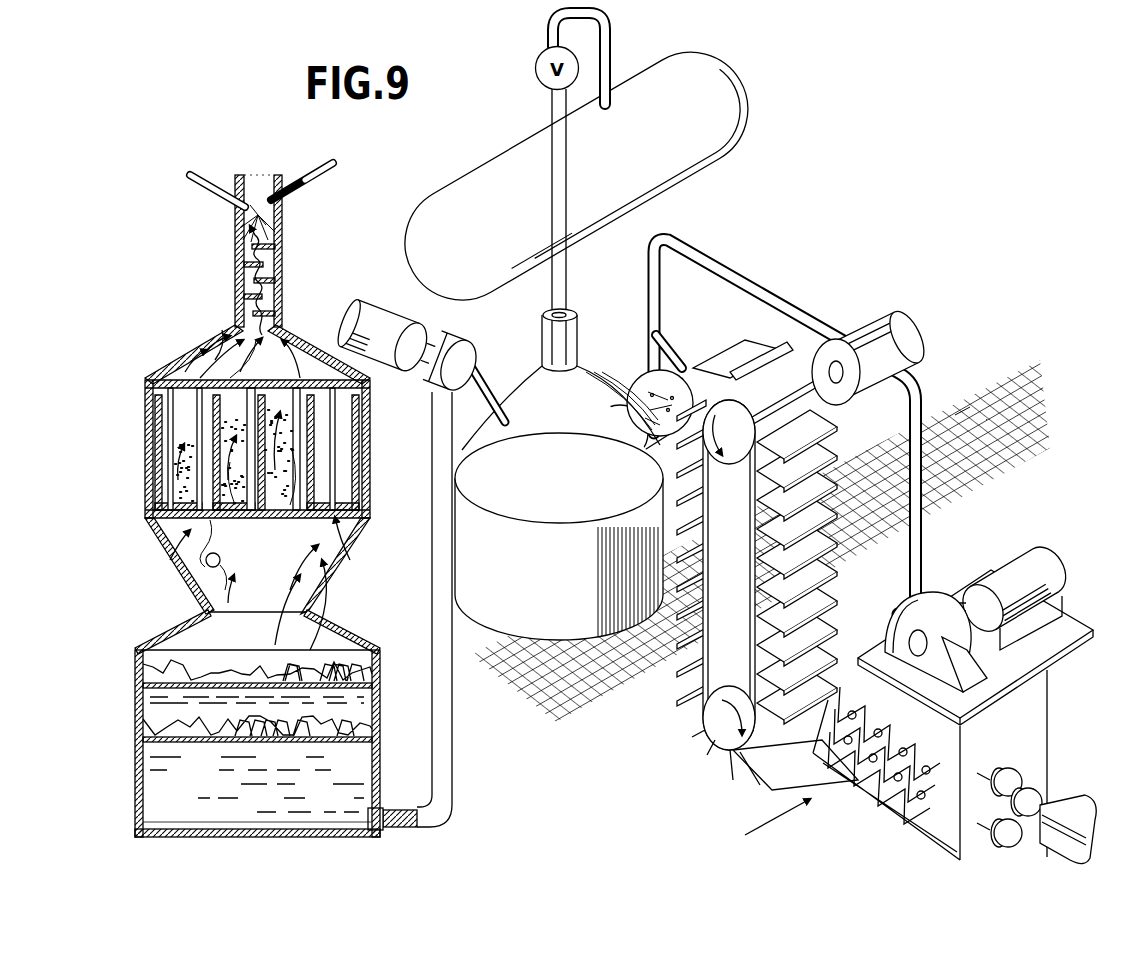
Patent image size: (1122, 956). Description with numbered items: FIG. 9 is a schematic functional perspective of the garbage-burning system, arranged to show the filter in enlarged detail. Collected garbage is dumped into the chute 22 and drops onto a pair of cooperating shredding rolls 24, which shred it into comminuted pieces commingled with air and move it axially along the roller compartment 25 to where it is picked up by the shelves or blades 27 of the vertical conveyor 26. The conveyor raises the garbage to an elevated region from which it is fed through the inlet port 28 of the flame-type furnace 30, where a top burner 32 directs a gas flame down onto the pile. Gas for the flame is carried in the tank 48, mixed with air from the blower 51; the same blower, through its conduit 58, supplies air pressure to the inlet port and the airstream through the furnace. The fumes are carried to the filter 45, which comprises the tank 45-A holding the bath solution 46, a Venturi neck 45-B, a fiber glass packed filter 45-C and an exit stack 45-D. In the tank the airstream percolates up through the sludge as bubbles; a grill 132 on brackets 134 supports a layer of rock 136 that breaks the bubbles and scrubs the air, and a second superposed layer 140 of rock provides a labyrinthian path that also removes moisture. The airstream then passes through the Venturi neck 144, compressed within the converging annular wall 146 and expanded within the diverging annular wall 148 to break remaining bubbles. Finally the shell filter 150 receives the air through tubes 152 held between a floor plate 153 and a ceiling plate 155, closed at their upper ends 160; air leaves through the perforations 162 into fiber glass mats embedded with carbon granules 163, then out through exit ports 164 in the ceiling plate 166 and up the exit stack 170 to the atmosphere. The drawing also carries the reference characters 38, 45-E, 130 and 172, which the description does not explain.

The chute 22 is at (905, 826).
The shredding rolls 24 is at (958, 722).
The roller compartment 25 is at (958, 850).
The vertical conveyor 26 is at (675, 721).
The shelves or blades 27 is at (730, 768).
The inlet port 28 is at (650, 372).
The flame-type furnace 30 is at (568, 470).
The top burner 32 is at (550, 312).
The mesh floor 38 is at (526, 700).
The filter 45 is at (119, 662).
The tank 45-A is at (220, 798).
The Venturi neck 45-B is at (228, 583).
The fiber glass packed filter 45-C is at (226, 449).
The exit stack 45-D is at (226, 351).
The stack zone E 45-E is at (178, 244).
The bath solution 46 is at (143, 760).
The tank 48 is at (407, 232).
The blower 51 is at (905, 612).
The conduit 58 is at (908, 558).
The rock layer 130 is at (286, 668).
The grill 132 is at (286, 717).
The brackets 134 is at (98, 712).
The rock 136 is at (286, 697).
The second superposed layer 140 is at (419, 563).
The Venturi neck 144 is at (362, 482).
The converging annular wall 146 is at (287, 552).
The diverging annular wall 148 is at (338, 469).
The filter 150 is at (314, 452).
The tubes 152 is at (285, 484).
The floor plate 153 is at (151, 546).
The ceiling plate 155 is at (206, 346).
The upper ends 160 is at (289, 280).
The perforations 162 is at (251, 449).
The carbon granules 163 is at (230, 555).
The exit ports 164 is at (291, 280).
The ceiling plate 166 is at (222, 332).
The exit stack 170 is at (282, 262).
The spray tubes 172 is at (270, 180).